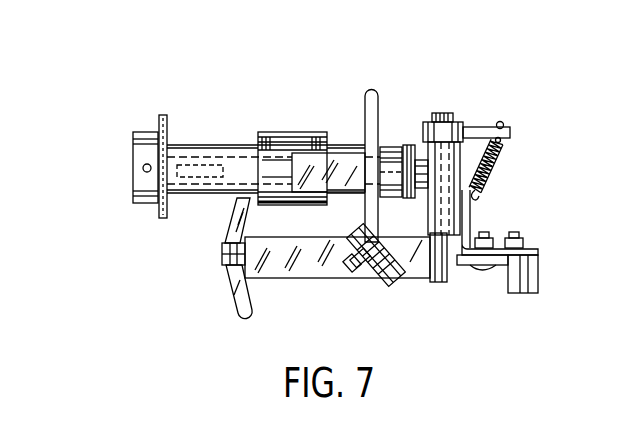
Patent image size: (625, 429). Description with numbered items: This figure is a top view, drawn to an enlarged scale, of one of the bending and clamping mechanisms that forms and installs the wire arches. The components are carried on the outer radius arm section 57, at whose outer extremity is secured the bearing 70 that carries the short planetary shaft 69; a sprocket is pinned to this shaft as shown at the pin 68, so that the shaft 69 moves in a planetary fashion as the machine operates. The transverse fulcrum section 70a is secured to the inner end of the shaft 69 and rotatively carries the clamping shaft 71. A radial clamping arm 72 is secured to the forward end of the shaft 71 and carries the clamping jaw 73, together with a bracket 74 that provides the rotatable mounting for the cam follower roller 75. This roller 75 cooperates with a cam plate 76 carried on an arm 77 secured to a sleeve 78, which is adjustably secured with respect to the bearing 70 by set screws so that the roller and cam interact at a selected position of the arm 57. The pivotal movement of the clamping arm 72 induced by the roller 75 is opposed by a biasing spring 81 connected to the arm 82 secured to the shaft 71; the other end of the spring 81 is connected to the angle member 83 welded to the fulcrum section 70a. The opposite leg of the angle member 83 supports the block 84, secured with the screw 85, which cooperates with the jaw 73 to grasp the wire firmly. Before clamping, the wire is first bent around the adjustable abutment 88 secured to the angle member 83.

The outer radius arm section 57 is at (198, 177).
The pin 68 is at (143, 168).
The short planetary shaft 69 is at (187, 157).
The bearing 70 is at (227, 145).
The transverse fulcrum section 70a is at (457, 175).
The clamping shaft 71 is at (443, 113).
The radial clamping arm 72 is at (288, 278).
The clamping jaw 73 is at (238, 290).
The bracket 74 is at (370, 275).
The cam follower roller 75 is at (392, 277).
The cam plate 76 is at (376, 127).
The arm 77 is at (342, 163).
The sleeve 78 is at (293, 132).
The biasing spring 81 is at (502, 152).
The arm 82 is at (511, 131).
The angle member 83 is at (468, 217).
The block 84 is at (463, 270).
The screw 85 is at (483, 268).
The adjustable abutment 88 is at (540, 268).